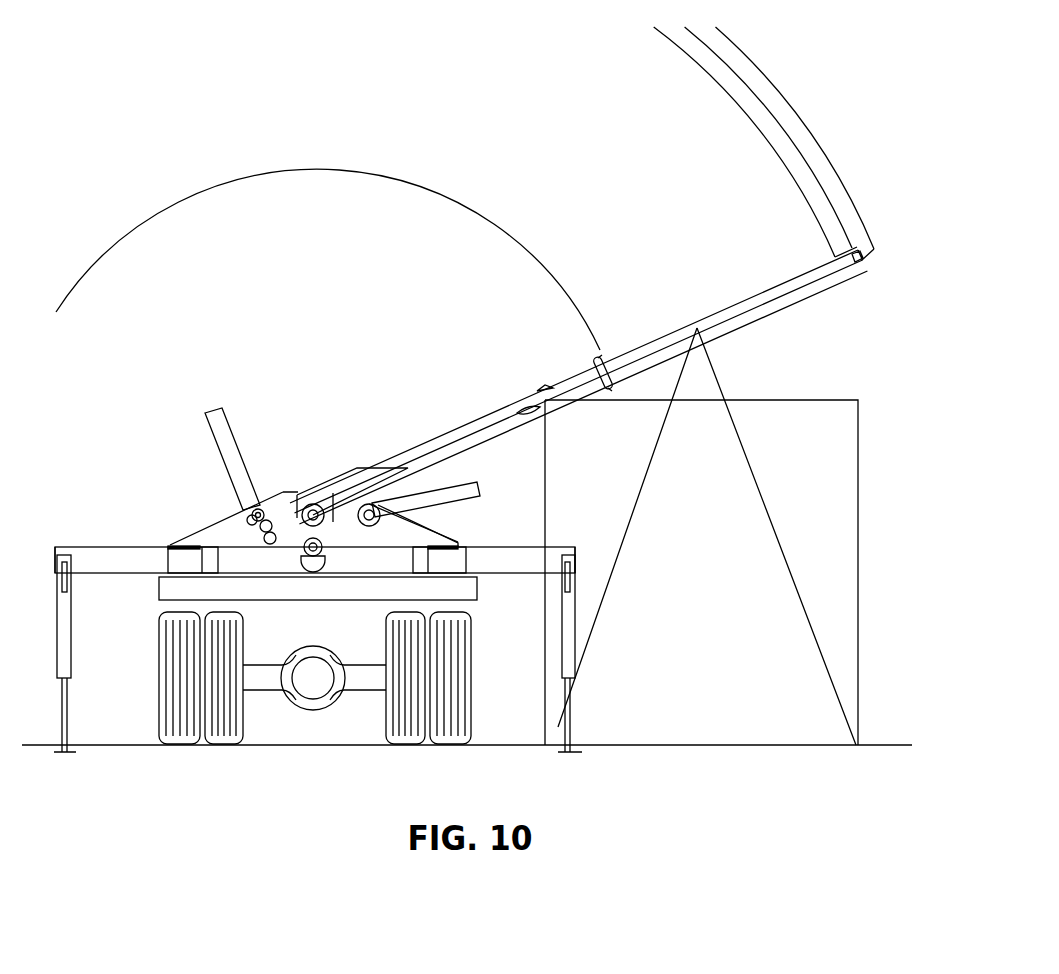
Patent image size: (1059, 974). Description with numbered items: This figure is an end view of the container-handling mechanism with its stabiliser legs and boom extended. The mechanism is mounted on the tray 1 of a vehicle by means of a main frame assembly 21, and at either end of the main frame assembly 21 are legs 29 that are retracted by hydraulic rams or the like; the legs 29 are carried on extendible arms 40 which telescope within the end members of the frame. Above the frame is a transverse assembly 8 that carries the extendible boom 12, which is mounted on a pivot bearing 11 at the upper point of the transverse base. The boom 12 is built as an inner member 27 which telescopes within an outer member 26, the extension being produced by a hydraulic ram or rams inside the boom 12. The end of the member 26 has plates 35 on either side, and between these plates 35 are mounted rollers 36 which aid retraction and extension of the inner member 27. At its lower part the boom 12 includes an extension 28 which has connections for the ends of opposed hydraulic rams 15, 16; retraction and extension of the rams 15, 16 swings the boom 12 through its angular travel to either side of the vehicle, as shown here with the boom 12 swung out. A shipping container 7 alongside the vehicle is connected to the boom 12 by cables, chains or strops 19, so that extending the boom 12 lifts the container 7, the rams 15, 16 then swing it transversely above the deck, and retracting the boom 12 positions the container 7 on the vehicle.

The tray 1 is at (480, 590).
The shipping container 7 is at (860, 537).
The transverse assembly 8 is at (328, 392).
The pivot bearing 11 is at (330, 540).
The telescoping boom 12 is at (610, 346).
The hydraulic ram 15 is at (234, 424).
The hydraulic ram 16 is at (480, 488).
The cables, chains or strops 19 is at (614, 570).
The main frame assembly 21 is at (467, 541).
The outer member 26 is at (386, 462).
The inner member 27 is at (776, 306).
The extension 28 is at (302, 535).
The legs 29 is at (72, 636).
The plates 35 is at (470, 437).
The rollers 36 is at (600, 352).
The extendible arms 40 is at (104, 545).